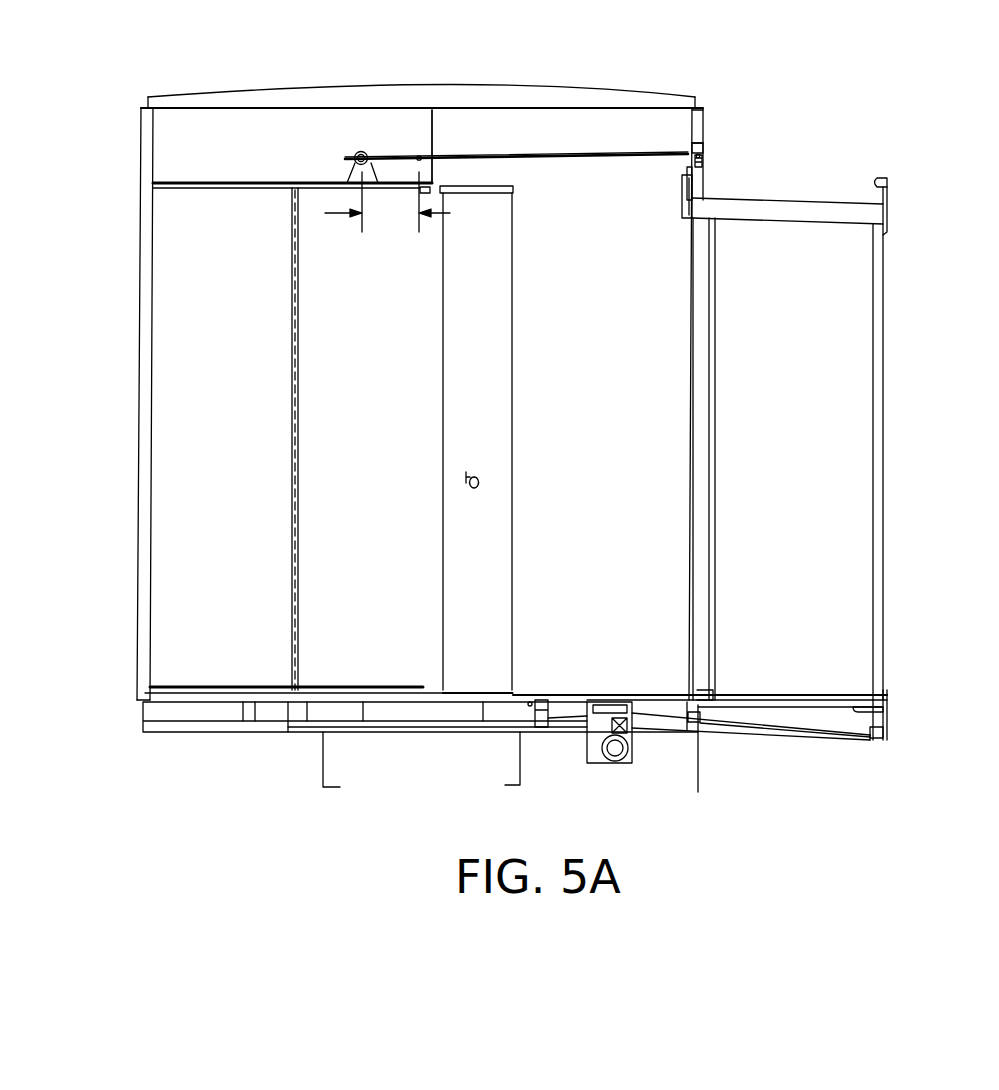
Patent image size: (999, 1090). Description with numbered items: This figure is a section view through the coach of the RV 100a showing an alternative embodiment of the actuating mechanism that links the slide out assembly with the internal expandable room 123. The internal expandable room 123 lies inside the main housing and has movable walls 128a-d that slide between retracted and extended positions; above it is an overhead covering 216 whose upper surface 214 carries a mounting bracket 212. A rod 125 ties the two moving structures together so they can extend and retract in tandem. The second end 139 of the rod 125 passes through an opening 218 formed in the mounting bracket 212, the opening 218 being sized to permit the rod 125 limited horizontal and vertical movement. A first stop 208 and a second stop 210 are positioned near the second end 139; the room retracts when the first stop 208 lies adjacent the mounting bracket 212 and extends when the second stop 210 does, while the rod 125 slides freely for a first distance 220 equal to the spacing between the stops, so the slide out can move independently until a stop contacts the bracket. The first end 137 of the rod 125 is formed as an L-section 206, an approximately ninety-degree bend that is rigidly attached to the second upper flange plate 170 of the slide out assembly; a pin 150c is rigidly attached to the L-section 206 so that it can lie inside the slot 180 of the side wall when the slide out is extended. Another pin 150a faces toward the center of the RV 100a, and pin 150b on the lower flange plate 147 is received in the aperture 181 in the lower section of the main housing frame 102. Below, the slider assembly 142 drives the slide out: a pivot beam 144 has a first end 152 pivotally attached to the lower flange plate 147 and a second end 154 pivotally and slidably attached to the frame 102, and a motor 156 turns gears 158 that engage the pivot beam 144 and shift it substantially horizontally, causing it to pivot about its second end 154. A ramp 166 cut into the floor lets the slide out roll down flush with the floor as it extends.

The RV 100a is at (648, 40).
The main housing frame 102 is at (182, 713).
The internal expandable room 123 is at (330, 497).
The rod 125 is at (650, 157).
The movable walls 128a-d is at (333, 190).
The first end of the rod 137 is at (700, 130).
The second end of the rod 139 is at (419, 155).
The slider assembly 142 is at (666, 762).
The pivot beam 144 is at (768, 727).
The lower flange plate 147 is at (890, 709).
The pin 150a is at (885, 178).
The pin 150b is at (885, 742).
The pin 150c is at (703, 162).
The first end of the pivot beam 152 is at (847, 732).
The second end of the pivot beam 154 is at (541, 704).
The motor 156 is at (595, 740).
The gears 158 is at (613, 718).
The ramp 166 is at (697, 695).
The second upper flange plate 170 is at (683, 212).
The slot 180 is at (702, 148).
The aperture 181 is at (704, 720).
The L-section 206 is at (693, 183).
The first stop 208 is at (433, 138).
The second stop 210 is at (356, 151).
The mounting bracket 212 is at (330, 165).
The upper surface 214 is at (402, 183).
The overhead covering 216 is at (333, 190).
The opening 218 is at (373, 156).
The first distance 220 is at (387, 202).